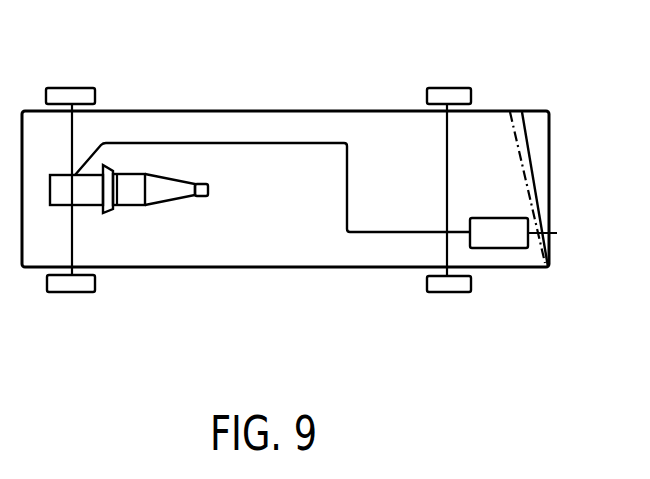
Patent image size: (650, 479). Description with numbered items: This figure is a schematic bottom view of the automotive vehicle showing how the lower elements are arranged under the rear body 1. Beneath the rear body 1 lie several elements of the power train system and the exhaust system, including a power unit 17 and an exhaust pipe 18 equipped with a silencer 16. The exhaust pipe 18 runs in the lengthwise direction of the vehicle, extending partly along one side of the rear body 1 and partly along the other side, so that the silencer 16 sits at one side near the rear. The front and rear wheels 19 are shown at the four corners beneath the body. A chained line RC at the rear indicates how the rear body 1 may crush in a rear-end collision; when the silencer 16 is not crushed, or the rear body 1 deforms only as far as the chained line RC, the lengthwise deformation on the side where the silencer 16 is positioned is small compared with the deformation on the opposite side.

The rear body 1 is at (237, 268).
The silencer 16 is at (503, 248).
The power unit 17 is at (135, 206).
The exhaust pipe 18 is at (385, 232).
The front and rear wheels 19 is at (85, 88).
The chained line RC is at (540, 208).